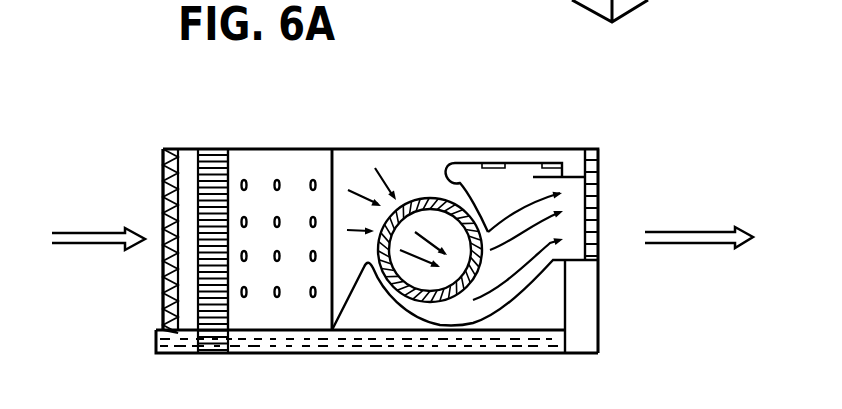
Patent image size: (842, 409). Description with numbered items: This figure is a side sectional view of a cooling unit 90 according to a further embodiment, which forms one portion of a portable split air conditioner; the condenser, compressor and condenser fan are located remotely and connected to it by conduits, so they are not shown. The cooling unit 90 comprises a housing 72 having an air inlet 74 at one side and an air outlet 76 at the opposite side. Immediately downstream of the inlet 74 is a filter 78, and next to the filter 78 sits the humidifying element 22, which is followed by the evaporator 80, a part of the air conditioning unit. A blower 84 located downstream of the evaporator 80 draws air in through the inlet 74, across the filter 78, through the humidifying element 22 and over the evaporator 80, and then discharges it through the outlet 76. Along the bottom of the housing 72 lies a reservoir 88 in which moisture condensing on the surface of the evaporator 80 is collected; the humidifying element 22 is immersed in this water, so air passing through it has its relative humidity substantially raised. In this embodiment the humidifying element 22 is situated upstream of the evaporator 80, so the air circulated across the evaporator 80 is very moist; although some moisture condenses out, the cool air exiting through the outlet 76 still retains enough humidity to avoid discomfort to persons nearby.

The cooling unit 90 is at (420, 121).
The housing 72 is at (372, 148).
The air inlet 74 is at (160, 272).
The air outlet 76 is at (602, 177).
The filter 78 is at (172, 148).
The humidifying element 22 is at (214, 155).
The evaporator 80 is at (291, 158).
The blower 84 is at (443, 300).
The reservoir 88 is at (388, 340).